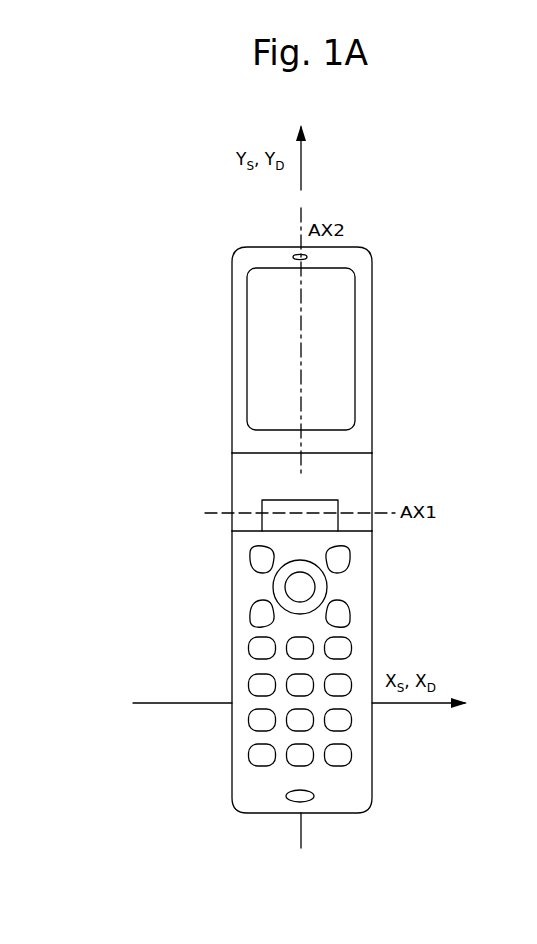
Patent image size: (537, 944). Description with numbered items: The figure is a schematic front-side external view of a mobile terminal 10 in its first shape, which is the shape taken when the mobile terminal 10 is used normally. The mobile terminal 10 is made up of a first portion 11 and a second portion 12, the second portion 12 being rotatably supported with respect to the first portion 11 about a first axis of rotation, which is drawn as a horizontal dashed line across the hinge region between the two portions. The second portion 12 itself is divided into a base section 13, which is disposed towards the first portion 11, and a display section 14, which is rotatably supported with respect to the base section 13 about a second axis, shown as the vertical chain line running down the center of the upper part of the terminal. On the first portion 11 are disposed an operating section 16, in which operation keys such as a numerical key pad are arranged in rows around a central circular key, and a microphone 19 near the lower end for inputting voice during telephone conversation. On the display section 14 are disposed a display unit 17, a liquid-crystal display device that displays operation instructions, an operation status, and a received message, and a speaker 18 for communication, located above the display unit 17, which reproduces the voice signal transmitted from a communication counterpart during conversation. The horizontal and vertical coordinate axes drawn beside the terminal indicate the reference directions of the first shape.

The mobile terminal 10 is at (410, 170).
The first portion 11 is at (391, 595).
The second portion 12 is at (470, 327).
The base section 13 is at (372, 472).
The display section 14 is at (372, 407).
The operating section 16 is at (246, 631).
The display unit 17 is at (247, 325).
The speaker 18 is at (296, 256).
The microphone 19 is at (314, 798).